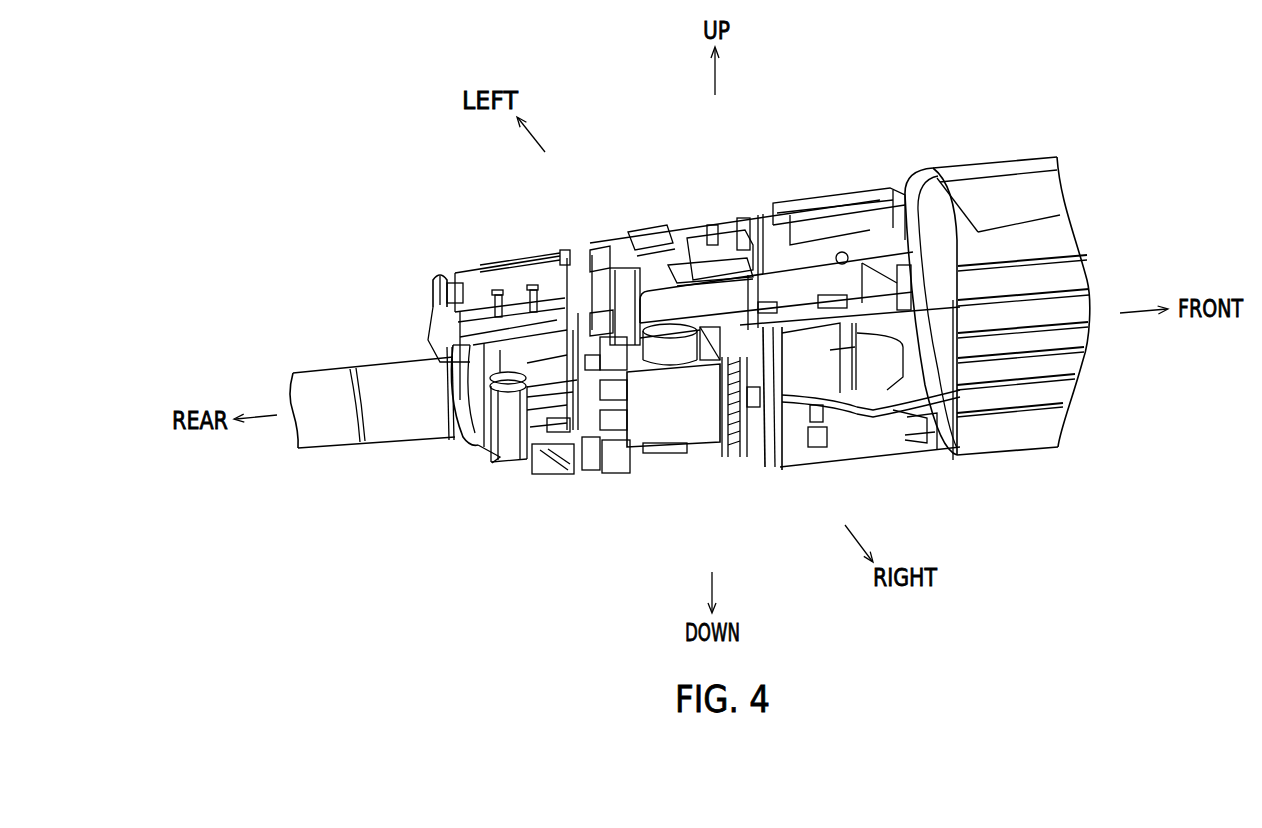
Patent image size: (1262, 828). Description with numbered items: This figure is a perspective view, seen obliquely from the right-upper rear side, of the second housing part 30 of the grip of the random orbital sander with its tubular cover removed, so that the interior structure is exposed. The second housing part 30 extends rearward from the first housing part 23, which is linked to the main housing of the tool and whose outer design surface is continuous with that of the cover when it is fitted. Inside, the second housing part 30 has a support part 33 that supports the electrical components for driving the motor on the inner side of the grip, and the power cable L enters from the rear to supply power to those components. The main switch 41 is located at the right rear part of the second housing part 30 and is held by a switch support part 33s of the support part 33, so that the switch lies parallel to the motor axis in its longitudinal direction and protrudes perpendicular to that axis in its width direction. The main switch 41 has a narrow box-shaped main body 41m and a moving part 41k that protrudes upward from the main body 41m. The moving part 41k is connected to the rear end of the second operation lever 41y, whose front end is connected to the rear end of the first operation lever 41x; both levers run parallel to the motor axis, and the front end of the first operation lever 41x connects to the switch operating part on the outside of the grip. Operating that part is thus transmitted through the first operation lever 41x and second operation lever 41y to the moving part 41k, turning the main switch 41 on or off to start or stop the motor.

The power cable L is at (320, 383).
The first housing part 23 is at (997, 215).
The second housing part 30 is at (692, 191).
The support part 33 is at (795, 447).
The switch support part 33s is at (581, 446).
The main switch 41 is at (684, 404).
The main body 41m is at (655, 413).
The moving part 41k is at (620, 255).
The first operation lever 41x is at (895, 255).
The second operation lever 41y is at (805, 305).